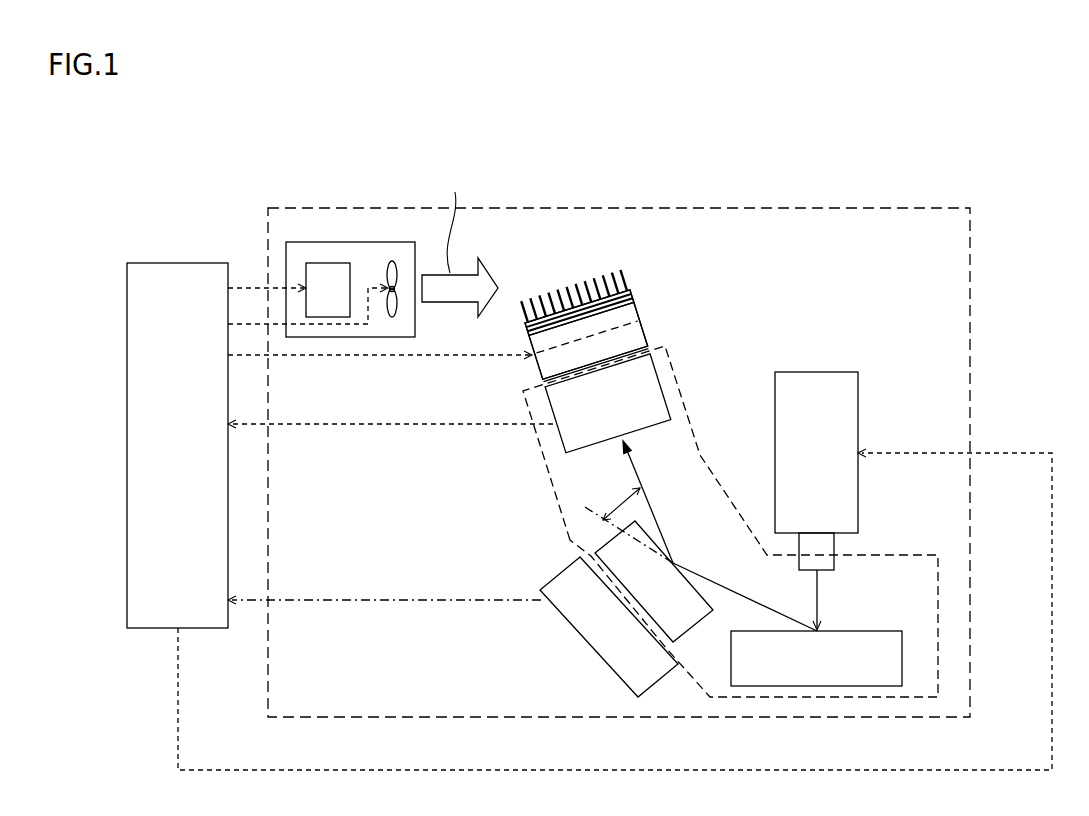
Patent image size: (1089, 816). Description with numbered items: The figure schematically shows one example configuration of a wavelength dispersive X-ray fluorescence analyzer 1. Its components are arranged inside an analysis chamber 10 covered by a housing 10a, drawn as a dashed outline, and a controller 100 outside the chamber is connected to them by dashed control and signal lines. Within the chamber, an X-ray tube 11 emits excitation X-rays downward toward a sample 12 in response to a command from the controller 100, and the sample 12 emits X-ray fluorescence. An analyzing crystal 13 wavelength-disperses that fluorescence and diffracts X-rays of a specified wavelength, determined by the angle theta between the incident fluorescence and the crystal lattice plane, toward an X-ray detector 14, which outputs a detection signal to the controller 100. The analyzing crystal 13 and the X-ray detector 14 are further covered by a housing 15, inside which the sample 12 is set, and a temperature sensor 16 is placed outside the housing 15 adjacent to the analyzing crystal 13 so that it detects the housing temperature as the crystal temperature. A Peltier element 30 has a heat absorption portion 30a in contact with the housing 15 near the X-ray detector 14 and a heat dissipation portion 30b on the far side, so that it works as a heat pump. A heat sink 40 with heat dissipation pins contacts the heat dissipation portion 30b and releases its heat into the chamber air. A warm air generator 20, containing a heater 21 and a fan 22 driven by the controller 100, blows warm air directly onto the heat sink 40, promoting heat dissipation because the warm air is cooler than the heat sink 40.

The X-ray fluorescence analyzer 1 is at (613, 116).
The analysis chamber 10 is at (785, 252).
The housing 10a is at (900, 207).
The controller 100 is at (175, 263).
The warm air generator 20 is at (365, 242).
The heater 21 is at (328, 317).
The fan 22 is at (392, 318).
The X-ray tube 11 is at (822, 371).
The sample 12 is at (817, 686).
The analyzing crystal 13 is at (693, 623).
The X-ray detector 14 is at (660, 383).
The housing 15 is at (908, 555).
The temperature sensor 16 is at (585, 637).
The Peltier element 30 is at (643, 326).
The heat absorption portion 30a is at (633, 337).
The heat dissipation portion 30b is at (623, 313).
The heat sink 40 is at (630, 277).